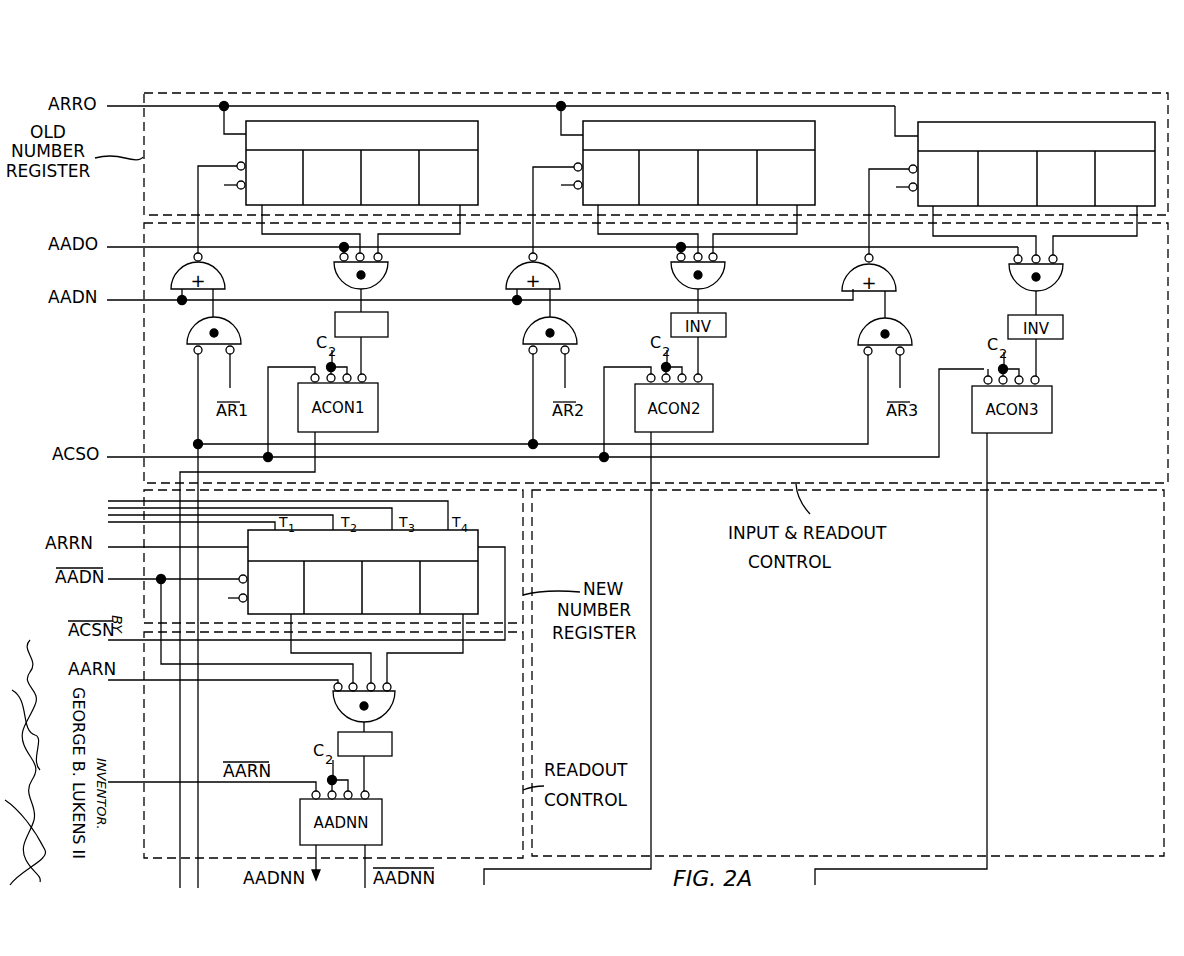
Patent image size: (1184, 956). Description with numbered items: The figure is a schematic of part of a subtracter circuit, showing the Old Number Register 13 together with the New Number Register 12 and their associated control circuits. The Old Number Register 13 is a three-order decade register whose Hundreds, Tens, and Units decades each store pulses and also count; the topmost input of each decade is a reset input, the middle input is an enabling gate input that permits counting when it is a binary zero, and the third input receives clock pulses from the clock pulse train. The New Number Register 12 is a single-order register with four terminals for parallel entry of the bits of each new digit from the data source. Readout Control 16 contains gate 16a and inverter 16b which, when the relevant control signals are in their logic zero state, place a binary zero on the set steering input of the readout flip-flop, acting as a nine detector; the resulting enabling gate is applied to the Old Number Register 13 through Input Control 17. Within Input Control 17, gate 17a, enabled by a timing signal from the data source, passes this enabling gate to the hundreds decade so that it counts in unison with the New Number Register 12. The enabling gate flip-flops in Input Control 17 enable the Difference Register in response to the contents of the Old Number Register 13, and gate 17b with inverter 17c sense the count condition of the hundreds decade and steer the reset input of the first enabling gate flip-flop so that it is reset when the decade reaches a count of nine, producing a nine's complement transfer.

The New Number Register 12 is at (523, 560).
The Old Number Register 13 is at (143, 195).
The Readout Control 16 is at (523, 717).
The gate 16a is at (393, 701).
The inverter 16b is at (392, 745).
The Input Control 17 is at (143, 375).
The gate 17a is at (241, 331).
The gate 17b is at (388, 272).
The inverter 17c is at (388, 327).